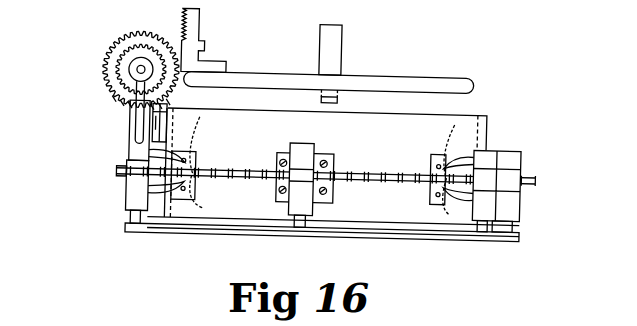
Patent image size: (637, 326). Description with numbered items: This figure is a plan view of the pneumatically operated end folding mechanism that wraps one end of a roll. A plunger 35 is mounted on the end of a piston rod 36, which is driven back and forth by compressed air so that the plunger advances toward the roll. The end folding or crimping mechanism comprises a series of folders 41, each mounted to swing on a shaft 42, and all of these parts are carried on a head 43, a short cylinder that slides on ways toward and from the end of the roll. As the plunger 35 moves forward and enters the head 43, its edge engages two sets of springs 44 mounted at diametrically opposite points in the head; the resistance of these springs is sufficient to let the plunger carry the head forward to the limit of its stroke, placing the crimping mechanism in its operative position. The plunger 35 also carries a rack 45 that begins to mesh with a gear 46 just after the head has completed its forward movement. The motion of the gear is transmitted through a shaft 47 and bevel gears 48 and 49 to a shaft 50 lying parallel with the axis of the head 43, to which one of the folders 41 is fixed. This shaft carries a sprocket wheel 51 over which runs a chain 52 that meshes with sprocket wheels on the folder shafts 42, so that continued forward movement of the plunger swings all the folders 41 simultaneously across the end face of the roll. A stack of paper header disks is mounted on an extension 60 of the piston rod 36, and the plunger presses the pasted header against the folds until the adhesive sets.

The plunger 35 is at (448, 78).
The piston rod 36 is at (340, 34).
The folders 41 is at (192, 231).
The shaft 42 is at (302, 219).
The head 43 is at (470, 131).
The springs 44 is at (205, 130).
The rack 45 is at (194, 18).
The gear 46 is at (106, 51).
The shaft 47 is at (140, 62).
The bevel gear 48 is at (118, 101).
The bevel gear 49 is at (120, 71).
The shaft 50 is at (131, 218).
The sprocket wheel 51 is at (120, 174).
The chain 52 is at (362, 166).
The extension 60 is at (325, 94).